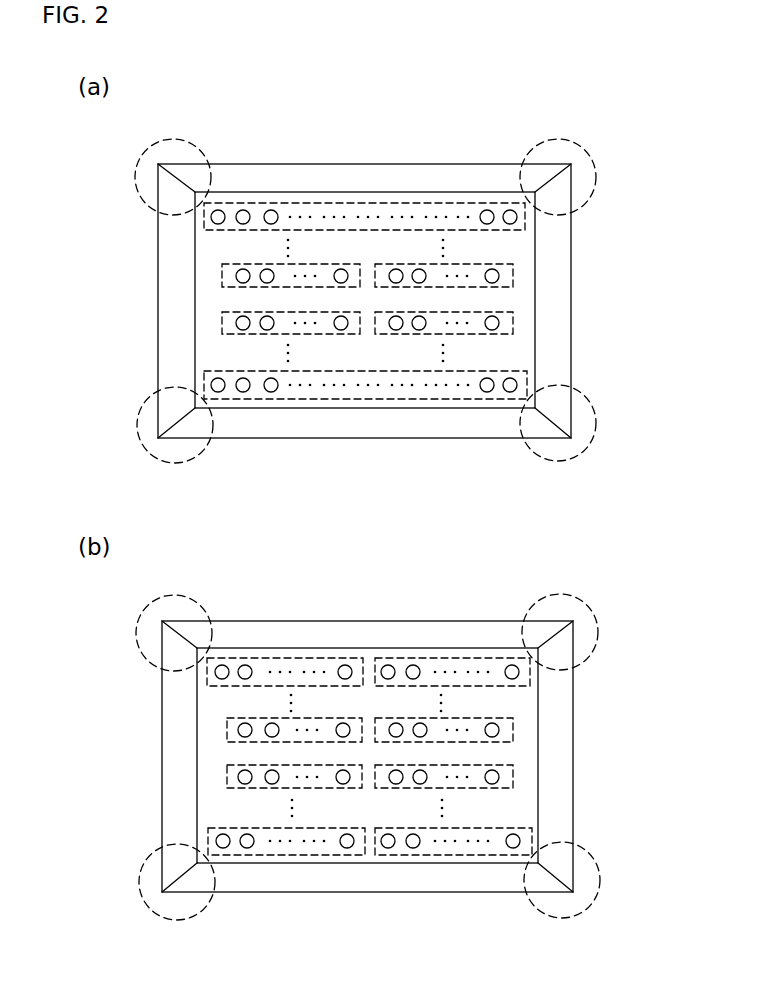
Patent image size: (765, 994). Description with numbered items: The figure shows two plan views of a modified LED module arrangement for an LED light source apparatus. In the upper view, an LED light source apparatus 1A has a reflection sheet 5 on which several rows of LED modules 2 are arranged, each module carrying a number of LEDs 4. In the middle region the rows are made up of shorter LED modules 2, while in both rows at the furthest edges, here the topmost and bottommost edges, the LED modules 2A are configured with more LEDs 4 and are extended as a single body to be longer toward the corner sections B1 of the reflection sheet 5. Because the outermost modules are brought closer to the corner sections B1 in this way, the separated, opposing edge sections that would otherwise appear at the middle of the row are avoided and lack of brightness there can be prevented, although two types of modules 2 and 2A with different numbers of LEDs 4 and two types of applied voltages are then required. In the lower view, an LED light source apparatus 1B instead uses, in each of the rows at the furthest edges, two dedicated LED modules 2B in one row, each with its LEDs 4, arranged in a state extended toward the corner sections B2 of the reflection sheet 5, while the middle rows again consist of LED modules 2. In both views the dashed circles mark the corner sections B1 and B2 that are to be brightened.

The LED light source apparatus 1A is at (496, 112).
The LED light source apparatus 1B is at (540, 556).
The LED module 2 is at (316, 264).
The LED module 2A is at (465, 232).
The LED module 2B is at (297, 658).
The LED 4 is at (222, 210).
The reflection sheet 5 is at (415, 164).
The corner section B1 is at (136, 200).
The corner section B2 is at (138, 655).